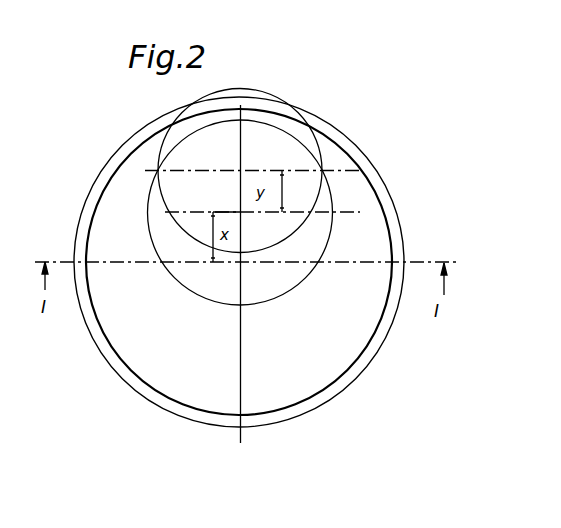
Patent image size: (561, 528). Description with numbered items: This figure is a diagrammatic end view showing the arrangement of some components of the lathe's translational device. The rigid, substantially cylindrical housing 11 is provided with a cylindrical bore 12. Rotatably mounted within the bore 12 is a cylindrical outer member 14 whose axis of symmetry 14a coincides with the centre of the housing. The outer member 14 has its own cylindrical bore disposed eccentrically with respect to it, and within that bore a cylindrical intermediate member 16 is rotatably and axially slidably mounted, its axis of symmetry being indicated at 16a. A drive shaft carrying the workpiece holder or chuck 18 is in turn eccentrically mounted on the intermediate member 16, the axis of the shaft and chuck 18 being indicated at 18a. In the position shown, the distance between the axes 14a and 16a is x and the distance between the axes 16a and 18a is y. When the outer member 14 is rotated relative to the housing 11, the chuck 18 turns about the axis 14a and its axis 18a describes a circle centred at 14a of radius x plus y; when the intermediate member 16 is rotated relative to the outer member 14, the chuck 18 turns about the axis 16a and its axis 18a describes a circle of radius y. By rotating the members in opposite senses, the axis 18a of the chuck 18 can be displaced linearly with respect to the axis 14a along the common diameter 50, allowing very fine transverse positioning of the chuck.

The housing 11 is at (123, 153).
The cylindrical bore 12 is at (98, 310).
The outer member 14 is at (247, 304).
The axis of symmetry of outer member 14a is at (240, 212).
The intermediate member 16 is at (200, 237).
The axis of symmetry of intermediate member 16a is at (240, 212).
The chuck 18 is at (240, 171).
The axis of symmetry of chuck 18a is at (240, 171).
The common diameter 50 is at (260, 274).